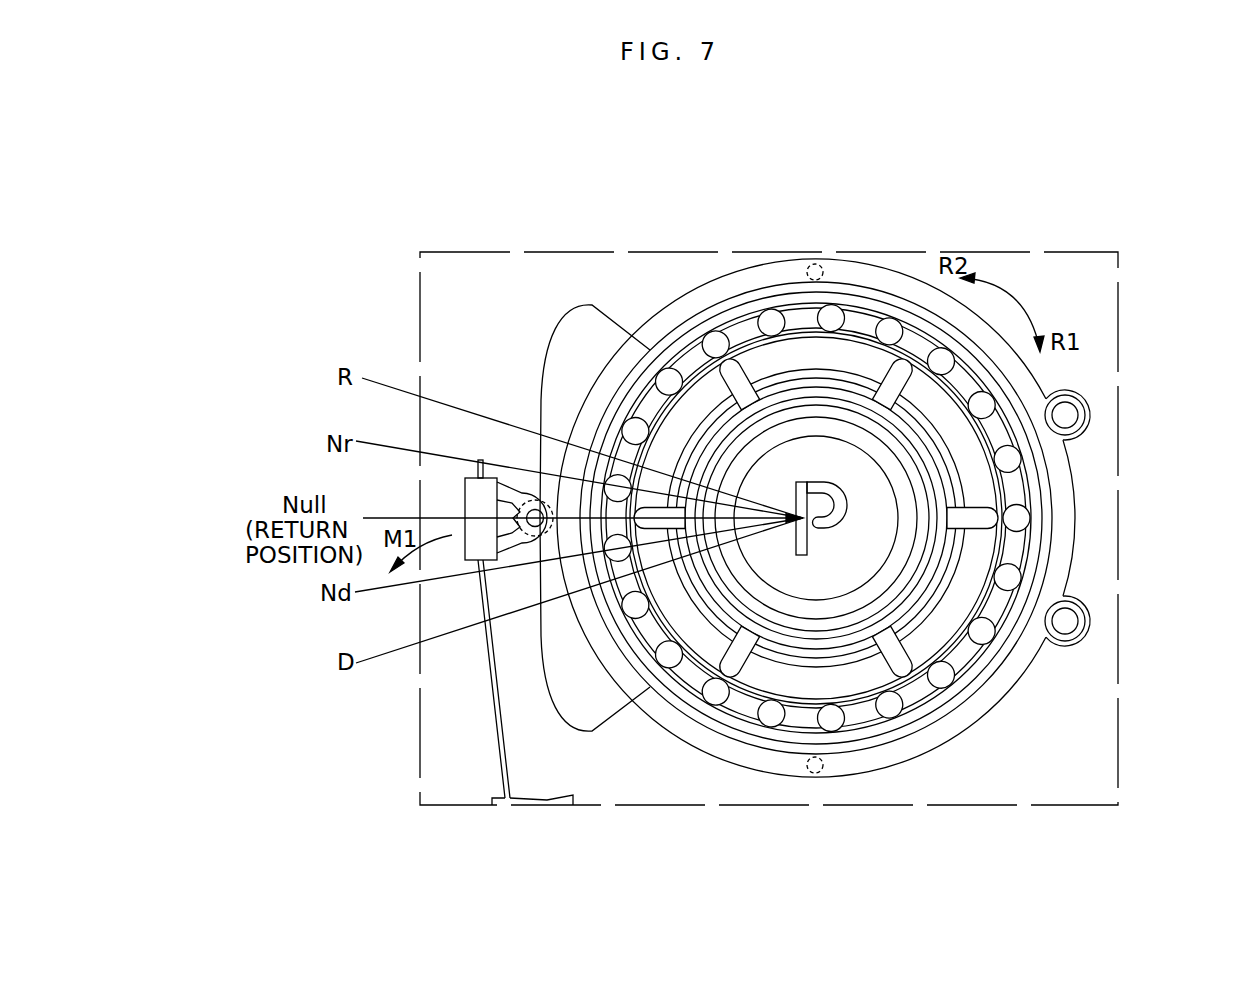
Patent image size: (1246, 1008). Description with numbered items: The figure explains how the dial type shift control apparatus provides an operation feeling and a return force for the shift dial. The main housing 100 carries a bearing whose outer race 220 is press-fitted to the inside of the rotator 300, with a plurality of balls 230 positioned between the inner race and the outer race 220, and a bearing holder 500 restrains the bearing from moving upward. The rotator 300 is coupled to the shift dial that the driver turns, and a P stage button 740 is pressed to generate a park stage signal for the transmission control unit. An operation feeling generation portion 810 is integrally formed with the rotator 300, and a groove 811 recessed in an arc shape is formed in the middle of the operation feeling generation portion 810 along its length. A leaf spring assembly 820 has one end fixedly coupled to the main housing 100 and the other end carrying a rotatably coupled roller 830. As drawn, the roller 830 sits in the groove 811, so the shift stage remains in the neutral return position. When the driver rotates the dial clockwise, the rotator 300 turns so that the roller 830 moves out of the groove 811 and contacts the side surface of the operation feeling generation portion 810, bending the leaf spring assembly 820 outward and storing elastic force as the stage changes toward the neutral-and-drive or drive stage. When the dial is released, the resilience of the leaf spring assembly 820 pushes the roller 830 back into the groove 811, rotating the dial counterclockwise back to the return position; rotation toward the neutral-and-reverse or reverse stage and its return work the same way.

The main housing 100 is at (1100, 568).
The rotator 300 is at (1060, 478).
The outer race 220 is at (982, 662).
The balls 230 is at (940, 676).
The bearing holder 500 is at (775, 362).
The P stage button 740 is at (858, 494).
The operation feeling generation portion 810 is at (588, 367).
The groove 811 is at (497, 536).
The leaf spring assembly 820 is at (493, 705).
The roller 830 is at (462, 483).